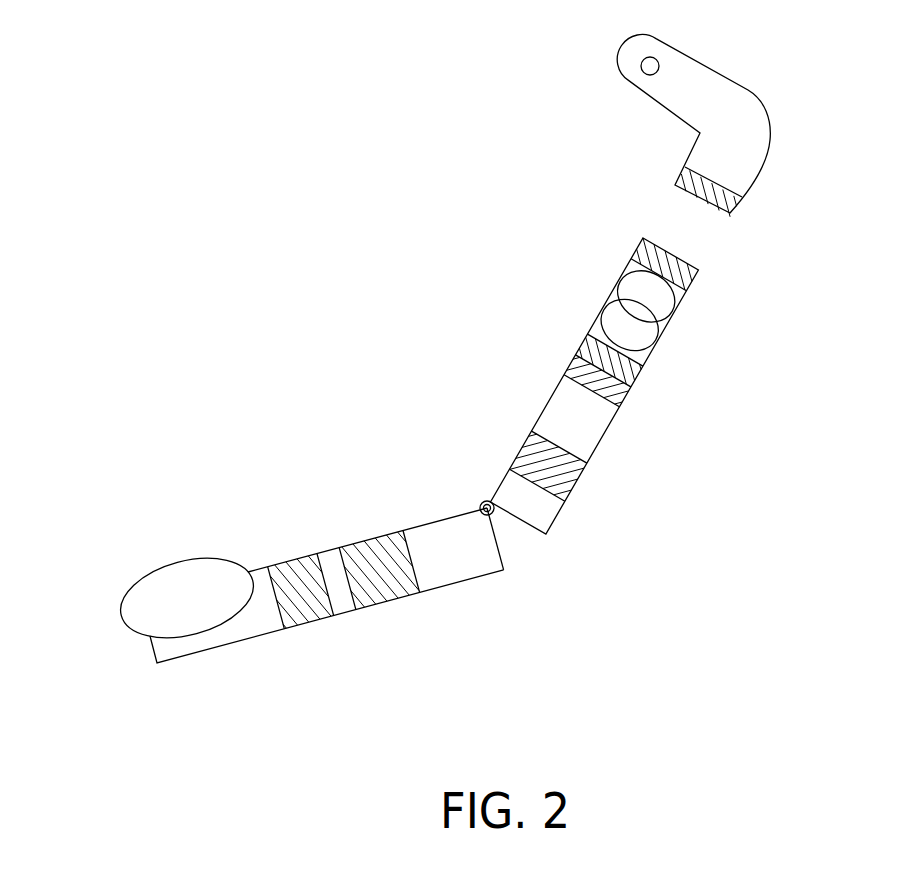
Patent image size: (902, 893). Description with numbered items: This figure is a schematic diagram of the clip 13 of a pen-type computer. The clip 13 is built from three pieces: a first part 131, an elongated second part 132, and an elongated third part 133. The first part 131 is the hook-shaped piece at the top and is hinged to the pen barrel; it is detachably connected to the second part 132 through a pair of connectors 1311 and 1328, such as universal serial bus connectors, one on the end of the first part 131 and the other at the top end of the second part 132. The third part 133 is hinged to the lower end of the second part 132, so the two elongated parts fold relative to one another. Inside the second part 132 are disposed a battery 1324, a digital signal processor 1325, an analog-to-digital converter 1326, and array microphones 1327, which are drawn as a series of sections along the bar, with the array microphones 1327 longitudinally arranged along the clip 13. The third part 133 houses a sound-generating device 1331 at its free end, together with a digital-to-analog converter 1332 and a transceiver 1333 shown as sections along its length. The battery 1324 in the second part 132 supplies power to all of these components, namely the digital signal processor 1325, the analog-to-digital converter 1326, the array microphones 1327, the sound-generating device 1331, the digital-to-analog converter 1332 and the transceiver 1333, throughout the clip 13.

The clip 13 is at (203, 131).
The first part 131 is at (626, 12).
The connector 1311 is at (740, 207).
The second part 132 is at (598, 228).
The battery 1324 is at (572, 490).
The digital signal processor 1325 is at (625, 398).
The analog-to-digital converter 1326 is at (632, 374).
The array microphones 1327 is at (640, 335).
The connector 1328 is at (697, 282).
The third part 133 is at (437, 473).
The sound-generating device 1331 is at (192, 603).
The digital-to-analog converter 1332 is at (310, 622).
The transceiver 1333 is at (378, 595).